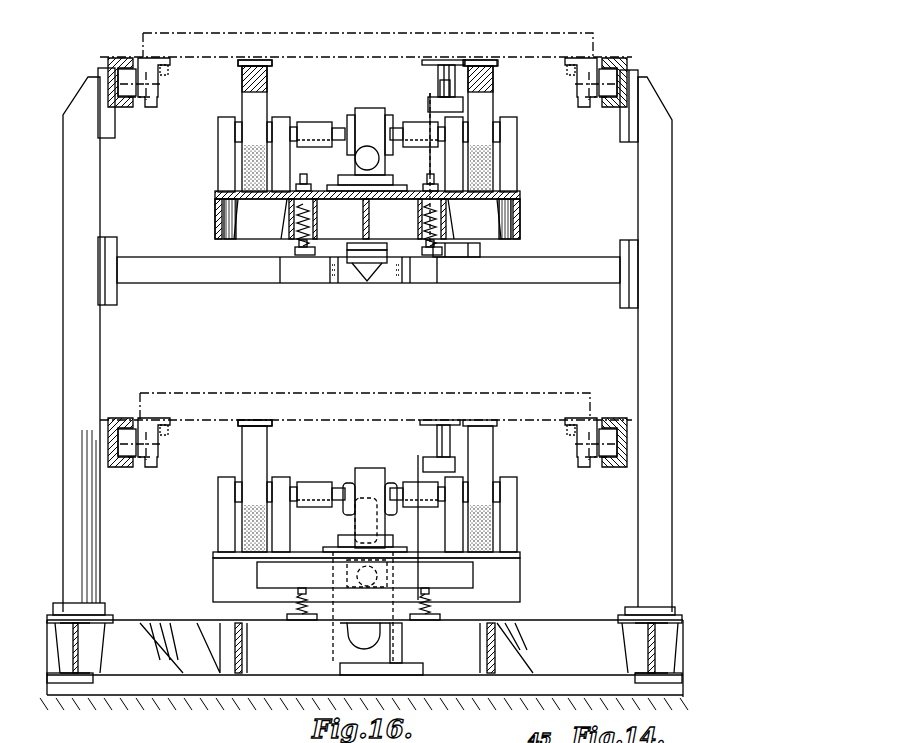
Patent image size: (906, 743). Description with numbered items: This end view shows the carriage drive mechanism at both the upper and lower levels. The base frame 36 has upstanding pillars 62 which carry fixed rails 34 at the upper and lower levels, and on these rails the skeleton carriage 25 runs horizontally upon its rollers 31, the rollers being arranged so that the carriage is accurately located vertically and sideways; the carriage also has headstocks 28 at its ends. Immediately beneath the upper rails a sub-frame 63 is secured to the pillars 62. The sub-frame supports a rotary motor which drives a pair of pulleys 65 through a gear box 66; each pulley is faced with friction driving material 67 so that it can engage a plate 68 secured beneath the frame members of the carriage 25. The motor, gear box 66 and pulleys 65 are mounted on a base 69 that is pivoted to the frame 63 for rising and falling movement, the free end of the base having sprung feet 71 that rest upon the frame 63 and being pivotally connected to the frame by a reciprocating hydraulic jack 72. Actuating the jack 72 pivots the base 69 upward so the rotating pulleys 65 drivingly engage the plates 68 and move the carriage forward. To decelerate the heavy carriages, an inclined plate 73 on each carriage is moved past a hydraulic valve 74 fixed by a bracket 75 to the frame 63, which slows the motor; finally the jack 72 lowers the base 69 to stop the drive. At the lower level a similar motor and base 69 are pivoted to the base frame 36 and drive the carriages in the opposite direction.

The skeleton carriage 25 is at (146, 34).
The headstock 28 is at (112, 732).
The rollers 31 is at (146, 106).
The rail 34 is at (111, 60).
The base frame 36 is at (100, 648).
The pillar 62 is at (88, 527).
The sub-frame 63 is at (222, 275).
The pulley 65 is at (246, 88).
The gear box 66 is at (367, 110).
The friction driving material 67 is at (243, 70).
The plate 68 is at (262, 60).
The base 69 is at (226, 208).
The sprung feet 71 is at (300, 250).
The hydraulic jack 72 is at (368, 252).
The inclined plate 73 is at (432, 72).
The hydraulic valve 74 is at (430, 105).
The bracket 75 is at (478, 240).